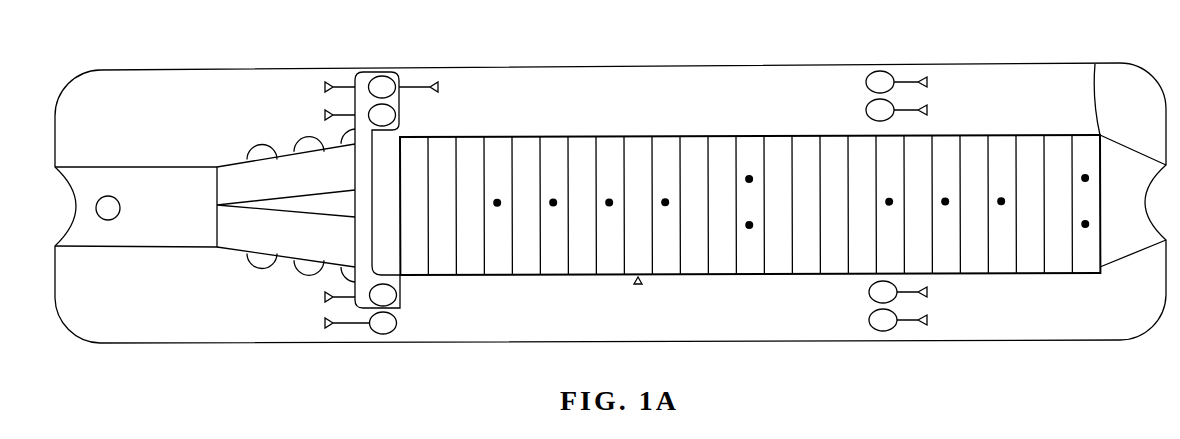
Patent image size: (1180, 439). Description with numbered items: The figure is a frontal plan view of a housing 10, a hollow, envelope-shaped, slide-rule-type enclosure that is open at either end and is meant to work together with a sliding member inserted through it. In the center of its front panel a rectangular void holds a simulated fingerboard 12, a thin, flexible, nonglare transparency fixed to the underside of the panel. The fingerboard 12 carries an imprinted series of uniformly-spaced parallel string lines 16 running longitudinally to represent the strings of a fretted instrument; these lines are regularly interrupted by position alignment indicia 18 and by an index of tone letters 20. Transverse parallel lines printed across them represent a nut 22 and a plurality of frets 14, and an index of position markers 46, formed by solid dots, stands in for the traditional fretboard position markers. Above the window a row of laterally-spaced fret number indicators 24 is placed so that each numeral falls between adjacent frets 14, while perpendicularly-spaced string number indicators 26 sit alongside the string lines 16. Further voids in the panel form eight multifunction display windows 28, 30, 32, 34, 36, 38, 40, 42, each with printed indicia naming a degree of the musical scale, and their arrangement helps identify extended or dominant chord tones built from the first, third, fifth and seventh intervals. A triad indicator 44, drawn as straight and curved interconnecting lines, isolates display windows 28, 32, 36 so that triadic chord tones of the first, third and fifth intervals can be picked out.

The housing 10 is at (178, 88).
The simulated fingerboard 12 is at (697, 158).
The frets 14 is at (764, 137).
The string lines 16 is at (680, 137).
The position alignment indicia 18 is at (1100, 217).
The index of tone letters 20 is at (690, 276).
The nut 22 is at (430, 252).
The fret number indicators 24 is at (834, 127).
The string number indicators 26 is at (380, 263).
The display window 28 is at (382, 76).
The display window 30 is at (879, 71).
The display window 32 is at (358, 72).
The display window 34 is at (866, 107).
The display window 36 is at (401, 306).
The display window 38 is at (868, 292).
The display window 40 is at (383, 334).
The display window 42 is at (888, 332).
The triad indicator 44 is at (355, 188).
The index of position markers 46 is at (498, 208).